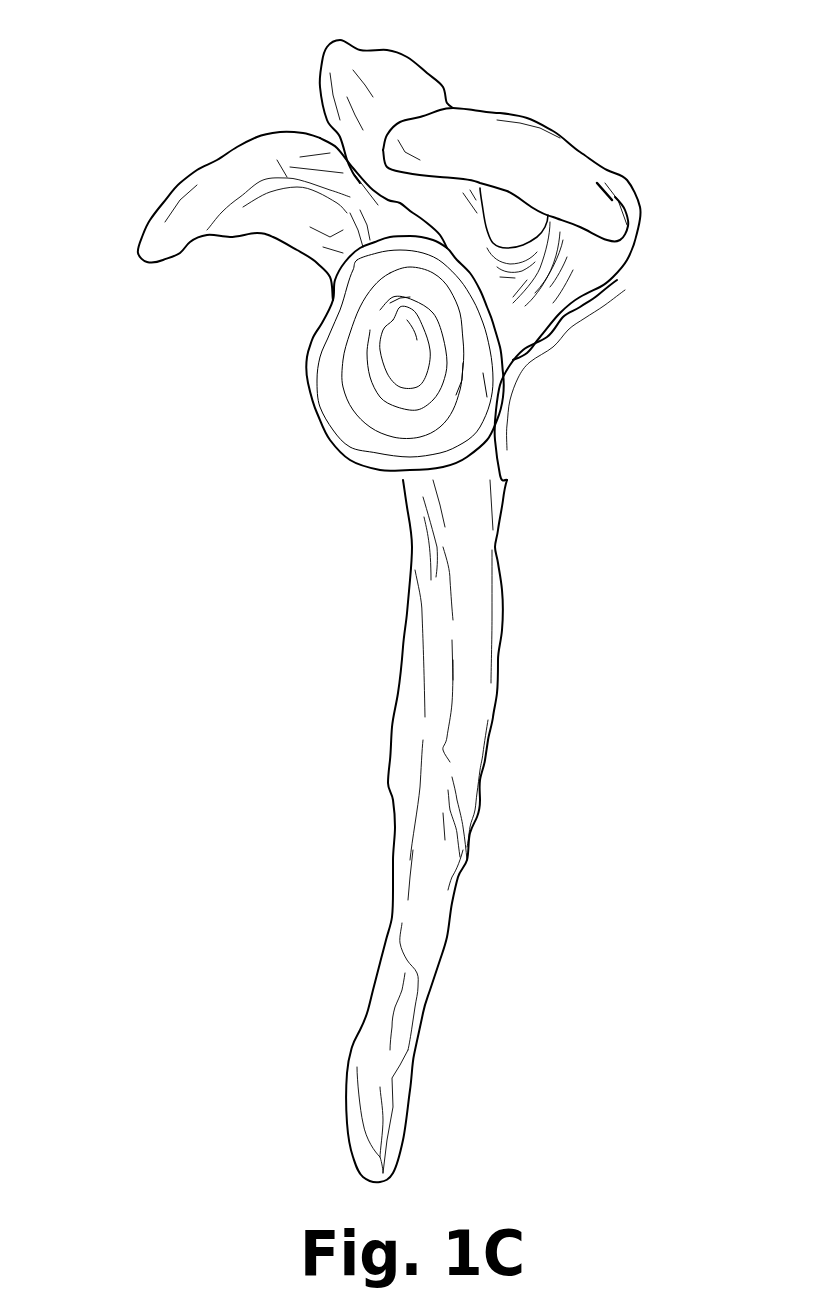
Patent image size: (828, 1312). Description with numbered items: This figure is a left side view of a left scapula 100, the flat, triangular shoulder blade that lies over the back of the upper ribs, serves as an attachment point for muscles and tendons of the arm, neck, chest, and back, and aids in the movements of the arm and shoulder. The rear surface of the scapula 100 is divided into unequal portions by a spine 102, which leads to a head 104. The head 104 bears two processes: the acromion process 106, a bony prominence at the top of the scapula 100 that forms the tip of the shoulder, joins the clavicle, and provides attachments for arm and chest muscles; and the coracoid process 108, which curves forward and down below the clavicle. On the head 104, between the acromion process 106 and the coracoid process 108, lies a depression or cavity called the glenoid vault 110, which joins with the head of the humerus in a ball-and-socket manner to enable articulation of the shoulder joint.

The scapula 100 is at (370, 599).
The spine 102 is at (587, 352).
The head 104 is at (403, 353).
The acromion process 106 is at (541, 90).
The coracoid process 108 is at (155, 162).
The glenoid vault 110 is at (426, 423).